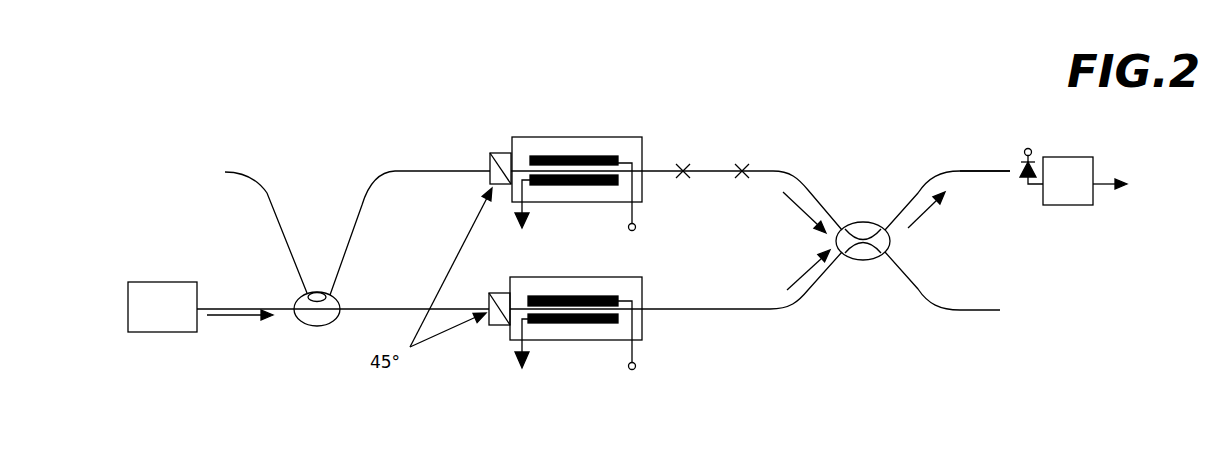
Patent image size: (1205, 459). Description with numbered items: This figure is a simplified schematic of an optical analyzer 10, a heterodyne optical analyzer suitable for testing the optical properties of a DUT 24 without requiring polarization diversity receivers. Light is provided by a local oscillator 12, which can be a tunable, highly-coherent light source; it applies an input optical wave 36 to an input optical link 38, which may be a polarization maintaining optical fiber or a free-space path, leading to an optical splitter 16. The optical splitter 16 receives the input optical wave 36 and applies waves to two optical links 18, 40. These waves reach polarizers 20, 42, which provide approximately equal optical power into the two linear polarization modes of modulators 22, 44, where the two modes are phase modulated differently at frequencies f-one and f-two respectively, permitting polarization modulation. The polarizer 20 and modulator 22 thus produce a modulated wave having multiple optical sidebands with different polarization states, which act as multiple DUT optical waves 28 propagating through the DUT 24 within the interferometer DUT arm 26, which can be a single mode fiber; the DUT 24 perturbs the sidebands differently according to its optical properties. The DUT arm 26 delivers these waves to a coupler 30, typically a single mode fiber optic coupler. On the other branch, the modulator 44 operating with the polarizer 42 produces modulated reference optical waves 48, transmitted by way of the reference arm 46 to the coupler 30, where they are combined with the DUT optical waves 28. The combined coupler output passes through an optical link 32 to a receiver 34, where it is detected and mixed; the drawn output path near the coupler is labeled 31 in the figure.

The optical analyzer 10 is at (803, 120).
The local oscillator 12 is at (175, 282).
The optical splitter 16 is at (317, 293).
The optical link 18 is at (387, 173).
The polarizer 20 is at (503, 152).
The modulator 22 is at (618, 137).
The DUT 24 is at (713, 137).
The interferometer DUT arm 26 is at (828, 190).
The DUT optical waves 28 is at (797, 213).
The coupler 30 is at (858, 262).
The coupler output fiber 31 is at (925, 215).
The optical link 32 is at (980, 171).
The receiver 34 is at (1095, 168).
The input optical wave 36 is at (225, 318).
The input optical link 38 is at (288, 311).
The optical link 40 is at (382, 308).
The polarizer 42 is at (497, 327).
The modulator 44 is at (643, 287).
The reference arm 46 is at (727, 322).
The modulated reference optical waves 48 is at (803, 277).